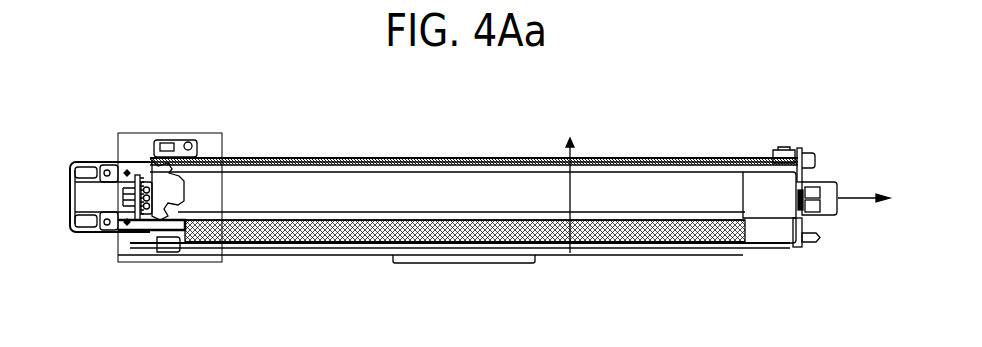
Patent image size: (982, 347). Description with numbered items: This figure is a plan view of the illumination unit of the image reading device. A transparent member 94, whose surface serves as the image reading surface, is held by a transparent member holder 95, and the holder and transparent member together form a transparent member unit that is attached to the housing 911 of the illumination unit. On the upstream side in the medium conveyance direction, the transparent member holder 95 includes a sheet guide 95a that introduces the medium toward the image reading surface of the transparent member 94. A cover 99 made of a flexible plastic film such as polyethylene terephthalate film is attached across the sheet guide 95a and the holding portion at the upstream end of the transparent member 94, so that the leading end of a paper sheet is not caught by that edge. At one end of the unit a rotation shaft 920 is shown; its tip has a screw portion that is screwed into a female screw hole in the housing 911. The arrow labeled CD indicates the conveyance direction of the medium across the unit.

The transparent member 94 is at (317, 188).
The transparent member holder 95 is at (662, 253).
The sheet guide 95a is at (263, 247).
The cover 99 is at (380, 233).
The housing 911 is at (108, 240).
The rotation shaft 920 is at (810, 242).
The conveying direction CD is at (572, 180).